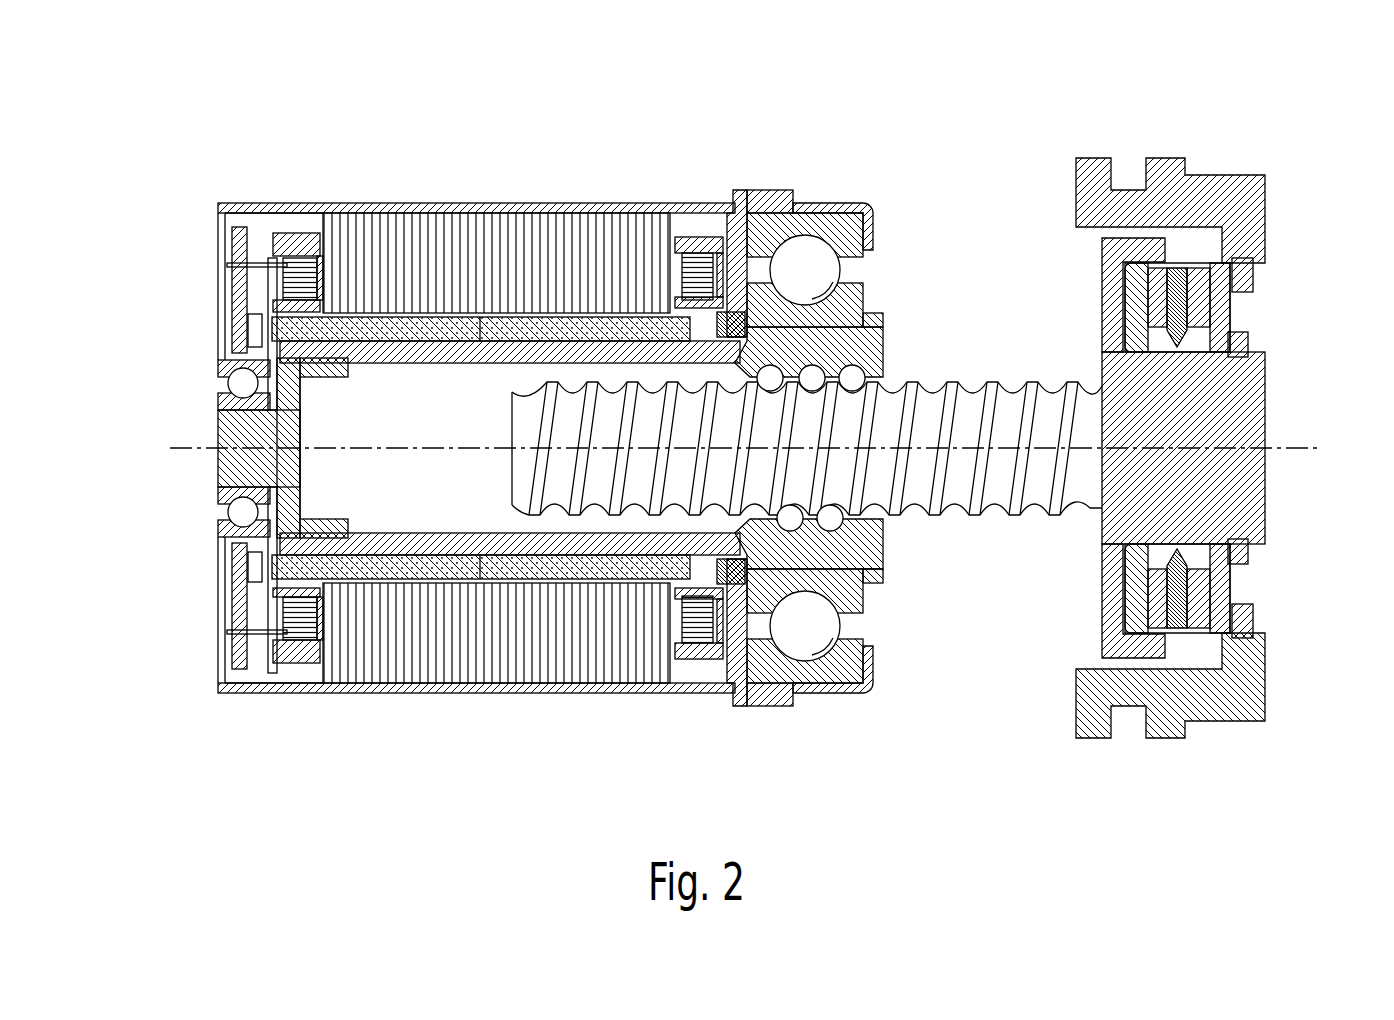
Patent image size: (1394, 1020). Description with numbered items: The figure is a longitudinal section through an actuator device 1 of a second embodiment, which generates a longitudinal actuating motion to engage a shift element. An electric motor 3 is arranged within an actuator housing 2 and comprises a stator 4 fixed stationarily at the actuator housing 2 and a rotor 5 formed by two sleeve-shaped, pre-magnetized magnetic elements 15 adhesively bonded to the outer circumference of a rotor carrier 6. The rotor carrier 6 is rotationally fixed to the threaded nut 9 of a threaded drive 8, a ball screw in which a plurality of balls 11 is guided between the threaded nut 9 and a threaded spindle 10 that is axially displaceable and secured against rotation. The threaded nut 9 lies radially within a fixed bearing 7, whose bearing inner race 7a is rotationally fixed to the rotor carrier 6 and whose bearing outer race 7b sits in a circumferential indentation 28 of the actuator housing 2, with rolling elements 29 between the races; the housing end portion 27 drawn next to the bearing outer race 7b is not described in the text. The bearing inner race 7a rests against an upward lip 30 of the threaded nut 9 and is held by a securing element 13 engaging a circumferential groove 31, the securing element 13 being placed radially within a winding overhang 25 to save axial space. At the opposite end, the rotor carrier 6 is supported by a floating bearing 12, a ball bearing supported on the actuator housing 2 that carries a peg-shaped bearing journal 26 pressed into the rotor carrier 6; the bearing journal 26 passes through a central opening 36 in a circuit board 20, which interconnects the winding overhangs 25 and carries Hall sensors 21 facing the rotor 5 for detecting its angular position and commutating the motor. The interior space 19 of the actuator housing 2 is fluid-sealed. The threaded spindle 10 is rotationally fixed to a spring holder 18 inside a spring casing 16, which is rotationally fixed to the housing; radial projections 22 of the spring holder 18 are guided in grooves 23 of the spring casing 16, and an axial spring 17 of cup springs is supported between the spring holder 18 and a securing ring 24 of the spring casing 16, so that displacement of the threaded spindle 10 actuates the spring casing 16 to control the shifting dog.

The actuator device 1 is at (185, 140).
The actuator housing 2 is at (505, 203).
The electric motor 3 is at (256, 236).
The stator 4 is at (420, 660).
The rotor 5 is at (699, 588).
The rotor carrier 6 is at (538, 556).
The fixed bearing 7 is at (882, 270).
The bearing inner race 7a is at (842, 292).
The bearing outer race 7b is at (818, 213).
The threaded drive 8 is at (908, 538).
The threaded nut 9 is at (874, 352).
The threaded spindle 10 is at (1052, 388).
The balls 11 is at (836, 528).
The floating bearing 12 is at (208, 383).
The securing element 13 is at (742, 337).
The magnetic element 15 is at (362, 318).
The spring casing 16 is at (1213, 193).
The axial spring 17 is at (1193, 657).
The spring holder 18 is at (1250, 405).
The interior space 19 is at (379, 500).
The circuit board 20 is at (240, 607).
The sensors 21 is at (255, 565).
The radial projections 22 is at (1120, 247).
The grooves 23 is at (1190, 237).
The securing ring 24 is at (1257, 280).
The winding overhangs 25 is at (295, 632).
The bearing journal 26 is at (233, 428).
The housing cap 27 is at (875, 228).
The circumferential indentation 28 is at (862, 673).
The rolling elements 29 is at (798, 640).
The upward lip 30 is at (869, 318).
The circumferential groove 31 is at (732, 562).
The central opening 36 is at (227, 355).